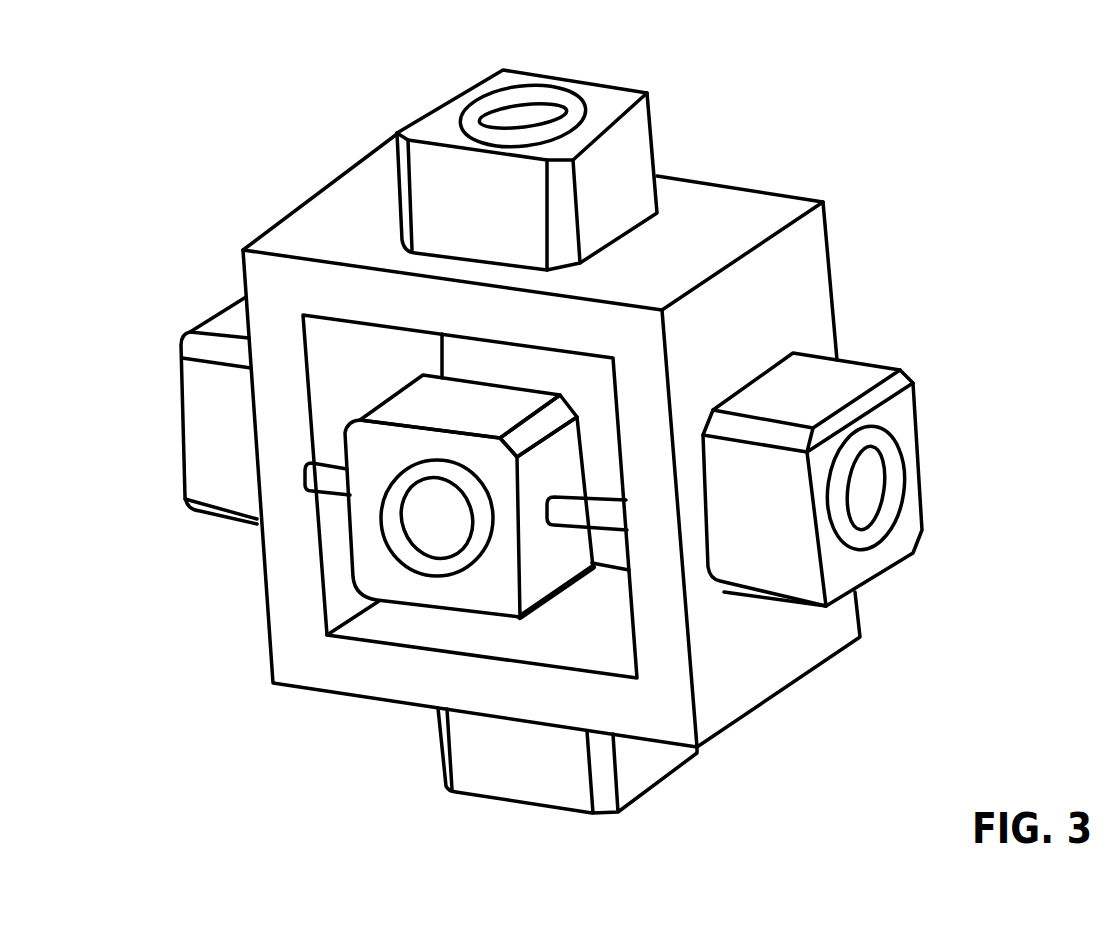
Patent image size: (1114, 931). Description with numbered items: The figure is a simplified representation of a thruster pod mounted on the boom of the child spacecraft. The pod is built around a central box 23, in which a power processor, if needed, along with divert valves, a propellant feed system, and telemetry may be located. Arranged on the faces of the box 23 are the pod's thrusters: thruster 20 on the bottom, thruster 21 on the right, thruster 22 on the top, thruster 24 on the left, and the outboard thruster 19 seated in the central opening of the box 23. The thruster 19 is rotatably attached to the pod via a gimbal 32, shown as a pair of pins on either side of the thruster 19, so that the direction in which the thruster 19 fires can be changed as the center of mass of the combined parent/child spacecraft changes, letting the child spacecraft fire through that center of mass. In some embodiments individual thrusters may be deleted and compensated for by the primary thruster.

The thruster 19 is at (345, 544).
The thruster 20 is at (512, 812).
The thruster 21 is at (930, 507).
The thruster 22 is at (656, 81).
The box 23 is at (313, 197).
The thruster 24 is at (170, 348).
The gimbal 32 is at (300, 475).